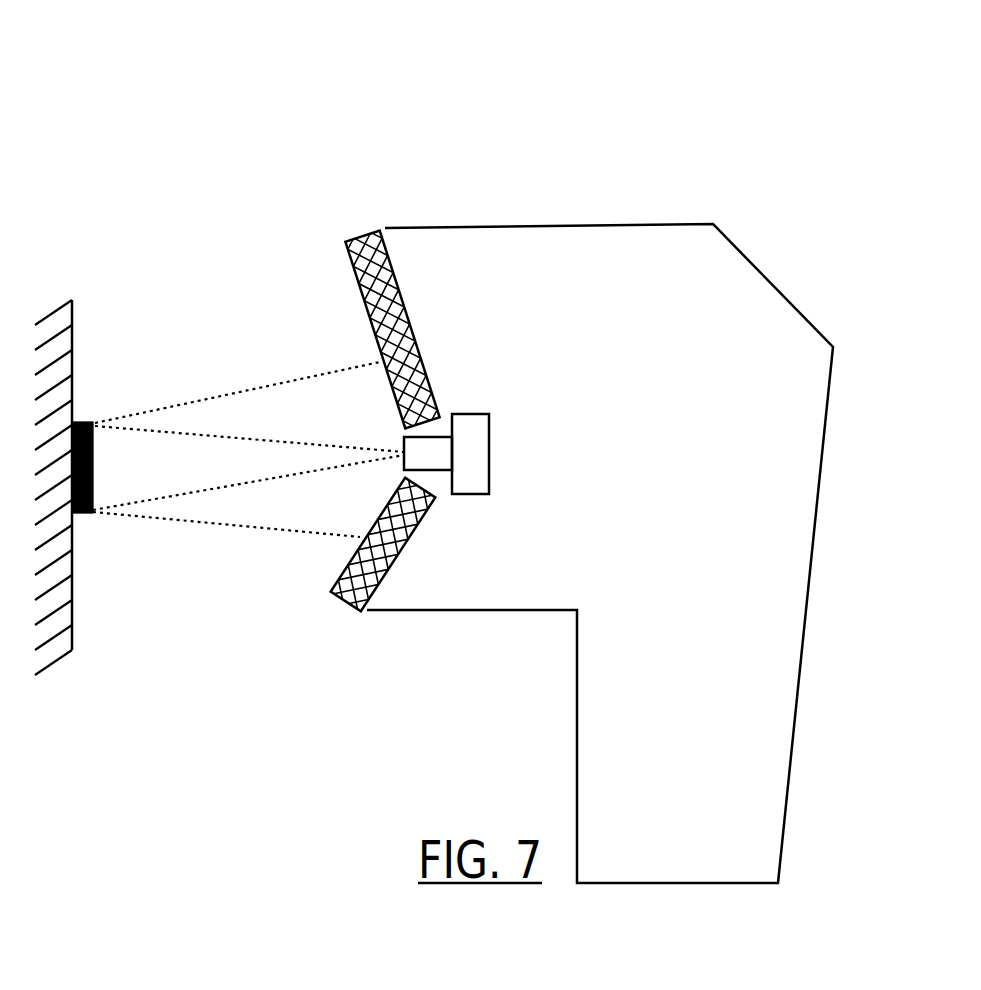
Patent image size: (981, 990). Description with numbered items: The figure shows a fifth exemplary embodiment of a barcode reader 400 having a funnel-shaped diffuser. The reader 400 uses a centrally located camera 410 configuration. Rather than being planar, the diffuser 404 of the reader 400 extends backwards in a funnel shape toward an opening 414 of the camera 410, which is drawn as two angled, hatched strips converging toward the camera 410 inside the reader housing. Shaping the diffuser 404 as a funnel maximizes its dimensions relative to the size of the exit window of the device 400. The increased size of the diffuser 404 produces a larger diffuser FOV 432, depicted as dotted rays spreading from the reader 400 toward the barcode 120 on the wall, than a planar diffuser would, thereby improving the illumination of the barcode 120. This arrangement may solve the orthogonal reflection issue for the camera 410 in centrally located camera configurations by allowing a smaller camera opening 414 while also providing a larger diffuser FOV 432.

The barcode reader 400 is at (797, 177).
The diffuser 404 is at (357, 273).
The camera 410 is at (489, 423).
The opening 414 is at (403, 459).
The diffuser FOV 432 is at (196, 413).
The barcode 120 is at (95, 463).